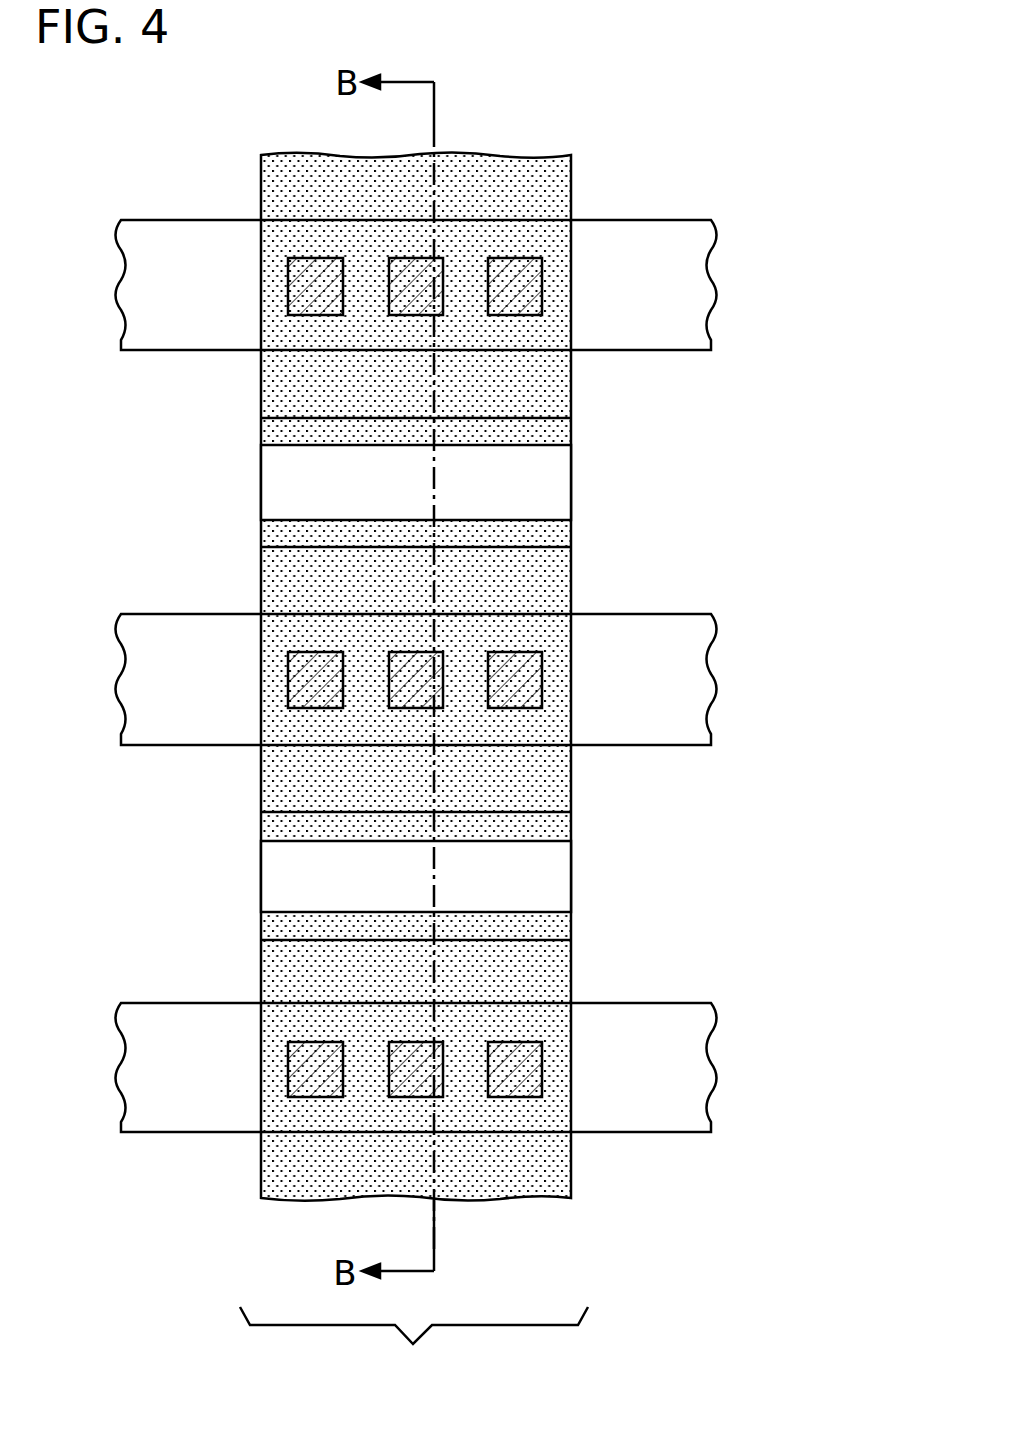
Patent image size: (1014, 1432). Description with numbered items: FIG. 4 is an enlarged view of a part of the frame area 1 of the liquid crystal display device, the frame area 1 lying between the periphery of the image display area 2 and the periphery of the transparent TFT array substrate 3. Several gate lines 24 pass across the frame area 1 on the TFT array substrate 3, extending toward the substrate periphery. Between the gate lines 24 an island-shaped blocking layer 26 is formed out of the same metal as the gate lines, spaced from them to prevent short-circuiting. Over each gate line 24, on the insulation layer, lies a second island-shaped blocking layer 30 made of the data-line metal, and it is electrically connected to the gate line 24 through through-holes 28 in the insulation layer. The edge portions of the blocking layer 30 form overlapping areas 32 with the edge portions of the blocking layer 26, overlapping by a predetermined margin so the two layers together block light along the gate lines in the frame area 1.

The frame area 1 is at (414, 1345).
The image display area 2 is at (757, 521).
The TFT array substrate 3 is at (72, 519).
The gate line 24 is at (642, 307).
The blocking layer 26 is at (548, 485).
The through-hole 28 is at (415, 677).
The blocking layer 30 is at (290, 192).
The overlapping area 32 is at (558, 430).